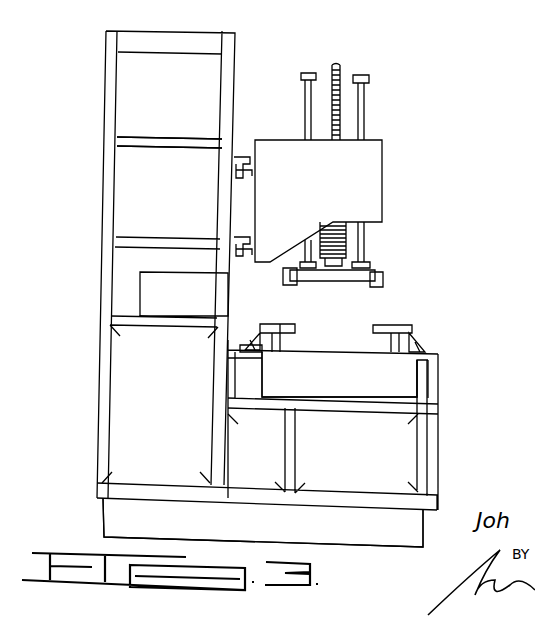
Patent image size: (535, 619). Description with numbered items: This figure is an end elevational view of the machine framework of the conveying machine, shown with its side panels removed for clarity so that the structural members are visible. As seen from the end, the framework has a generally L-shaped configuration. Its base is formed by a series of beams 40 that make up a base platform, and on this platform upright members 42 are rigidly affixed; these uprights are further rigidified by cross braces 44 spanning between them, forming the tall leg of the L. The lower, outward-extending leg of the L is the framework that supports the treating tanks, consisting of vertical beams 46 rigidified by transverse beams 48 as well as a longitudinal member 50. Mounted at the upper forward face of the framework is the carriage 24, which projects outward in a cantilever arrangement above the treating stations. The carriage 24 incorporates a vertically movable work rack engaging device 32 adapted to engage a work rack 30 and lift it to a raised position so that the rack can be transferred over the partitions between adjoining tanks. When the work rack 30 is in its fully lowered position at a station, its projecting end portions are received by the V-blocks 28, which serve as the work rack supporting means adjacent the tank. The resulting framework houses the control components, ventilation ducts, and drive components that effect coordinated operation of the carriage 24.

The carriage 24 is at (393, 193).
The V-blocks 28 is at (262, 325).
The work rack 30 is at (385, 310).
The work rack engaging device 32 is at (391, 269).
The beams 40 is at (373, 533).
The upright members 42 is at (226, 183).
The cross braces 44 is at (149, 46).
The vertical beams 46 is at (437, 438).
The transverse beams 48 is at (345, 420).
The longitudinal member 50 is at (445, 351).